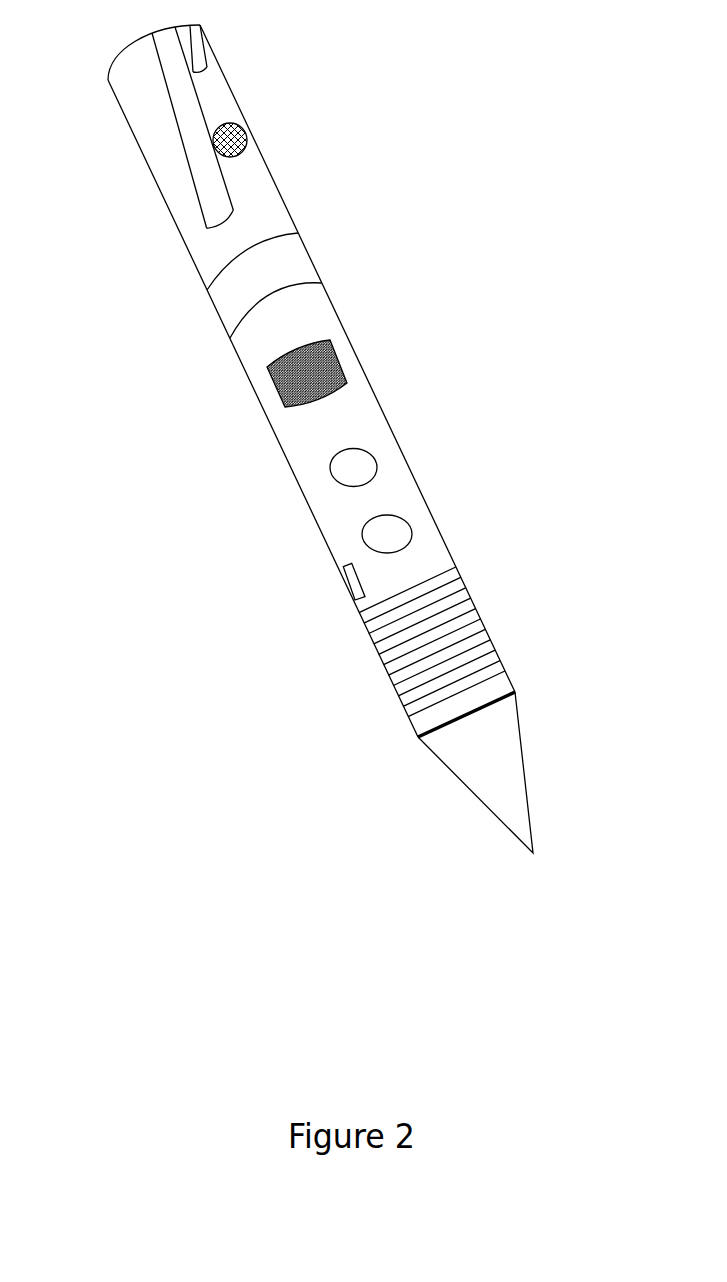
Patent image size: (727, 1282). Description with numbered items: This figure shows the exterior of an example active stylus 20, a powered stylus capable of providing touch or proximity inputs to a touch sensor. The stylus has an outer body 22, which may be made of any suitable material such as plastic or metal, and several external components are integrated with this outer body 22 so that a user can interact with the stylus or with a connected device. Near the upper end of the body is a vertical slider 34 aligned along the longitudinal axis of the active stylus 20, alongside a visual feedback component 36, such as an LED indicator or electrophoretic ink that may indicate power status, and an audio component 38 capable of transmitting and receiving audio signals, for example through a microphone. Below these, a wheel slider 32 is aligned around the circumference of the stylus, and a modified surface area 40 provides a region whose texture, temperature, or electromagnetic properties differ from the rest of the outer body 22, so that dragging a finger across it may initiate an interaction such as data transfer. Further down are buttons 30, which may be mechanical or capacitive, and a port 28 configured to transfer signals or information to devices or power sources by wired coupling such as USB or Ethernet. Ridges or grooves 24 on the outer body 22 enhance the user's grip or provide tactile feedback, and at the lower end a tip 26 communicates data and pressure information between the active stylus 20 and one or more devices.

The active stylus 20 is at (343, 439).
The outer body 22 is at (392, 418).
The ridges or grooves 24 is at (462, 610).
The tip 26 is at (528, 764).
The port 28 is at (350, 583).
The buttons 30 is at (373, 537).
The wheel slider 32 is at (232, 299).
The vertical slider 34 is at (168, 118).
The visual feedback component 36 is at (185, 43).
The audio component 38 is at (243, 125).
The modified surface area 40 is at (308, 363).